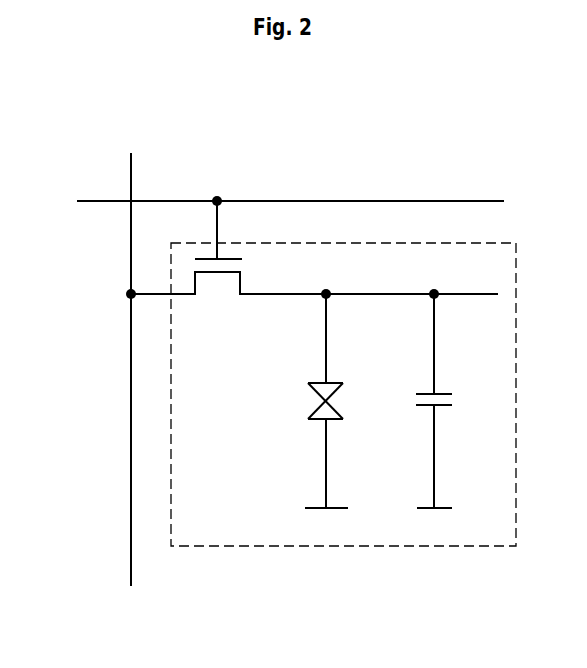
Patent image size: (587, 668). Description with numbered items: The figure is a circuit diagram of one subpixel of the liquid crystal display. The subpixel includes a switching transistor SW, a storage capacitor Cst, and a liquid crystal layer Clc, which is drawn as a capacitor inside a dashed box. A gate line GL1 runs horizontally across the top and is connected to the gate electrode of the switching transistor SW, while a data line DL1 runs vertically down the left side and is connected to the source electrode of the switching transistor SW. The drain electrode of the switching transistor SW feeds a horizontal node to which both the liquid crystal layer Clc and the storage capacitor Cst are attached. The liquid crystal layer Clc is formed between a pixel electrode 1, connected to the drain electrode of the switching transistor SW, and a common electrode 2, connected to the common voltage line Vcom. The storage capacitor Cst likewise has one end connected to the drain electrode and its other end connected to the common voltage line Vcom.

The pixel electrode 1 is at (319, 381).
The common electrode 2 is at (320, 421).
The data line DL1 is at (131, 357).
The gate line GL1 is at (274, 202).
The switching transistor SW is at (312, 259).
The liquid crystal layer Clc is at (336, 398).
The storage capacitor Cst is at (453, 398).
The common voltage line Vcom is at (326, 522).